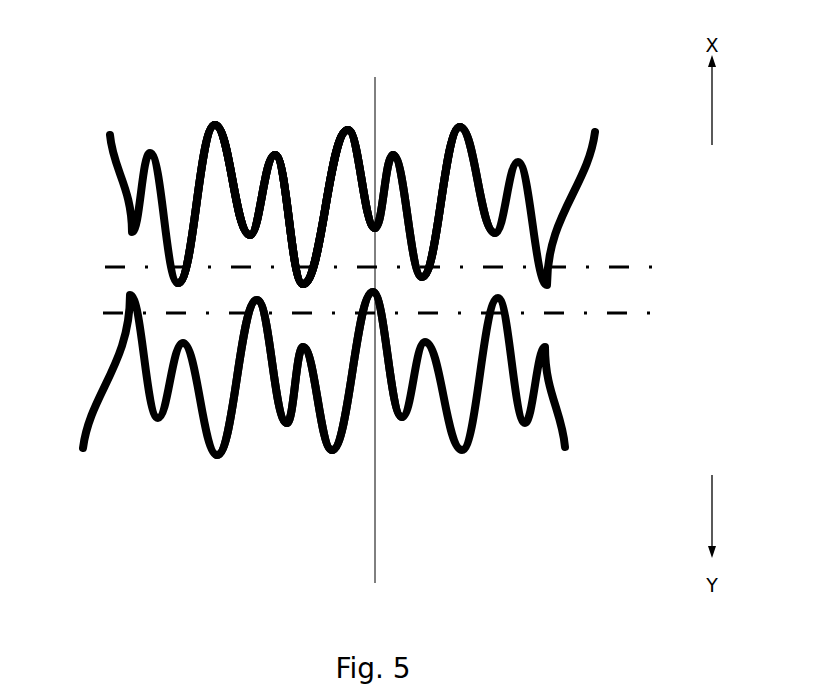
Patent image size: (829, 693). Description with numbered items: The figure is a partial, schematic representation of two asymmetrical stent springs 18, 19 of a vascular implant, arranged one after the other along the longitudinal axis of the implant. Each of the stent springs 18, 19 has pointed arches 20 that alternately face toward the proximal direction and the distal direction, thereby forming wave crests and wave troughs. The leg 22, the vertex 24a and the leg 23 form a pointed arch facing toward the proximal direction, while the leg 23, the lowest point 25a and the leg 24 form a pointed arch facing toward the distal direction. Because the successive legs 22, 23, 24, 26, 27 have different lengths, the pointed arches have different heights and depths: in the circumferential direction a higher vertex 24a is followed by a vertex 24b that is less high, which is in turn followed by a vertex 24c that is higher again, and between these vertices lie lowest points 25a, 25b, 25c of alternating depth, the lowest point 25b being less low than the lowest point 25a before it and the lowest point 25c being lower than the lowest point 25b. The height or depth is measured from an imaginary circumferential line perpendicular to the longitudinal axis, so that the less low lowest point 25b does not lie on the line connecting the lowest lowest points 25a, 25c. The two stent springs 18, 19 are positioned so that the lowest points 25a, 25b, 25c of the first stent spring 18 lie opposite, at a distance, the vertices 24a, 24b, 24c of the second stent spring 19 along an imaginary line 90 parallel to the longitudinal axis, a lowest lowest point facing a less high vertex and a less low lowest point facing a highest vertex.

The first stent spring 18 is at (599, 193).
The second stent spring 19 is at (599, 420).
The pointed arch 20 is at (478, 128).
The leg 22 is at (195, 182).
The leg 23 is at (230, 148).
The leg 24 is at (257, 177).
The vertex 24a is at (214, 120).
The vertex 24b is at (275, 149).
The vertex 24c is at (348, 124).
The lowest point 25a is at (303, 285).
The lowest point 25b is at (375, 232).
The lowest point 25c is at (423, 280).
The leg 26 is at (294, 242).
The leg 27 is at (318, 227).
The imaginary line 90 is at (375, 573).